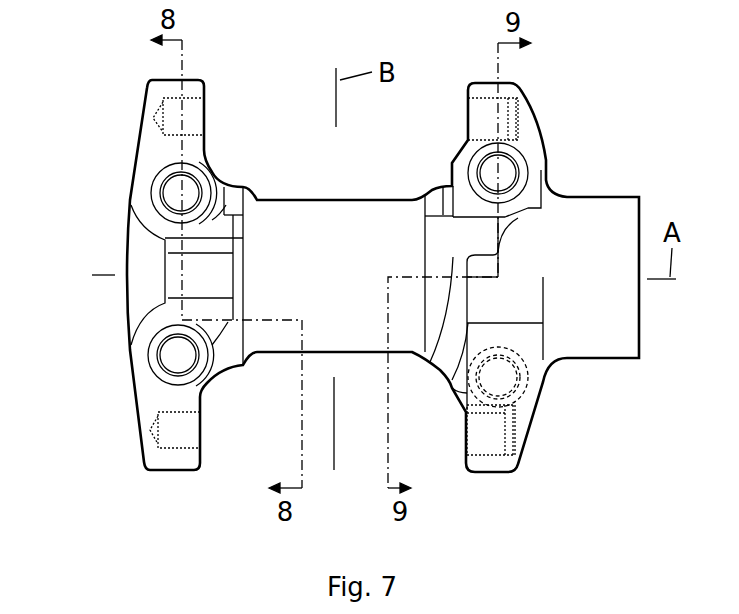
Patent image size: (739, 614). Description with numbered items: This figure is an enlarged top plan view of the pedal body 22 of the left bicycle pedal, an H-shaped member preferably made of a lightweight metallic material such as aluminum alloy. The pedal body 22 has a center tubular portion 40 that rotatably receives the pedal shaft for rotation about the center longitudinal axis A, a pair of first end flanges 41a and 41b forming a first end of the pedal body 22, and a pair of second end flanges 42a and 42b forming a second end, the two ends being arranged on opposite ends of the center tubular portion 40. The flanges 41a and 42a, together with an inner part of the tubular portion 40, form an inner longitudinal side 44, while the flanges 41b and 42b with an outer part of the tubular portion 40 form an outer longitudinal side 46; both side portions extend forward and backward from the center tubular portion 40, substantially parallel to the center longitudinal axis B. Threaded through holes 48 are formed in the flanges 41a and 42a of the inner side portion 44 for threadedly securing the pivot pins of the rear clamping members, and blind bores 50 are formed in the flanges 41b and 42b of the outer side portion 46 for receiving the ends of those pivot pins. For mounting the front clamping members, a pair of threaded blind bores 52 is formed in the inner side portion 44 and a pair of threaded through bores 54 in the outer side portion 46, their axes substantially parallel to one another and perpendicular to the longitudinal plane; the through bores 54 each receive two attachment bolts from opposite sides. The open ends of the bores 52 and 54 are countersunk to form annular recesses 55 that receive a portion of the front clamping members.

The pedal body 22 is at (588, 99).
The center tubular portion 40 is at (317, 196).
The first end flange 41a is at (512, 82).
The first end flange 41b is at (160, 79).
The second end flange 42a is at (500, 472).
The second end flange 42b is at (160, 471).
The inner longitudinal side 44 is at (551, 154).
The outer longitudinal side 46 is at (130, 150).
The threaded through holes 48 is at (470, 100).
The blind bores 50 is at (203, 100).
The threaded blind bores 52 is at (519, 173).
The threaded through bores 54 is at (198, 185).
The annular recesses 55 is at (150, 192).